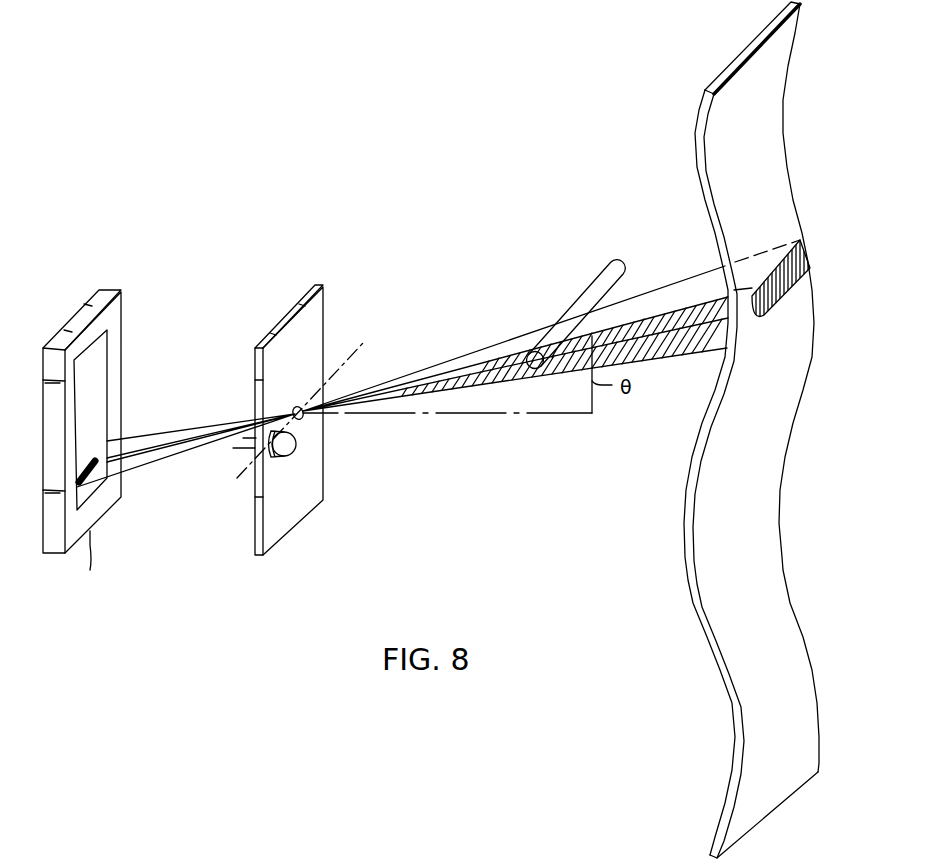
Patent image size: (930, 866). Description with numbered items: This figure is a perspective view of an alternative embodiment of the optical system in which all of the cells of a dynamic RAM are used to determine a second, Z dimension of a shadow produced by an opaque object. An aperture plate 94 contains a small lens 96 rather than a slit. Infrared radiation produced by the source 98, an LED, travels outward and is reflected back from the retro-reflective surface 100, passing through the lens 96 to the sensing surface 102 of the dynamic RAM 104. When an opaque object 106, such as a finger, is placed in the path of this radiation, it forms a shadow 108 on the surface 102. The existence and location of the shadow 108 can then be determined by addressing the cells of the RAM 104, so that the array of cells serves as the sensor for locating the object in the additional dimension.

The aperture plate 94 is at (280, 327).
The small lens 96 is at (300, 418).
The source 98 is at (287, 447).
The retro-reflective surface 100 is at (687, 558).
The sensing surface 102 is at (92, 342).
The dynamic RAM 104 is at (121, 397).
The opaque object 106 is at (583, 307).
The shadow 108 is at (98, 470).